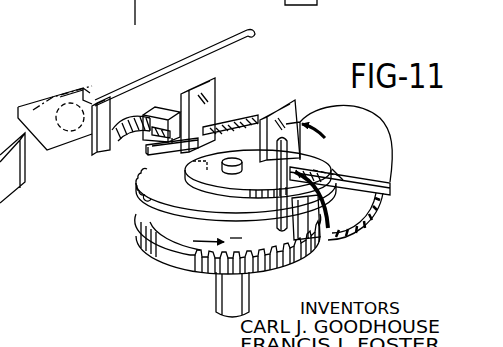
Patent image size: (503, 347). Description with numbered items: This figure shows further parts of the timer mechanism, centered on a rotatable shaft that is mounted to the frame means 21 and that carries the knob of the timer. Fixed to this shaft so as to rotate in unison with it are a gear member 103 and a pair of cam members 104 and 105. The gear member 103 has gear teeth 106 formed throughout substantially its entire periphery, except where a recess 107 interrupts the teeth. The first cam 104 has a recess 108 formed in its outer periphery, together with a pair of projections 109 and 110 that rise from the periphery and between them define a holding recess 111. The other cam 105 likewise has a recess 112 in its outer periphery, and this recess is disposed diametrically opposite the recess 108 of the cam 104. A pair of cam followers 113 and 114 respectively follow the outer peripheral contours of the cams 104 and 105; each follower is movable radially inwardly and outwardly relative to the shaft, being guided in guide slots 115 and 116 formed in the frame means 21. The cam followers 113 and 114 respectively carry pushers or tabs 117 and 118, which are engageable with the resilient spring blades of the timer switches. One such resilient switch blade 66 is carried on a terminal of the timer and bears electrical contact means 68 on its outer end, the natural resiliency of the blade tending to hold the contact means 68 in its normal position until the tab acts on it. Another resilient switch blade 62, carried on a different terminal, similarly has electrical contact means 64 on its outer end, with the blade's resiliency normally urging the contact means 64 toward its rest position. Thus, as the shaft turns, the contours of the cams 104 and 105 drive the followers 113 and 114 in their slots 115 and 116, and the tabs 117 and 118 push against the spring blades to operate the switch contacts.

The frame means 21 is at (364, 143).
The resilient switch blade 62 is at (35, 100).
The electrical contact means 64 is at (55, 98).
The resilient switch blade 66 is at (150, 86).
The electrical contact means 68 is at (92, 142).
The gear member 103 is at (287, 233).
The cam member 104 is at (160, 195).
The cam member 105 is at (200, 203).
The gear teeth 106 is at (142, 253).
The recess 107 is at (192, 268).
The recess 108 is at (172, 160).
The projection 109 is at (222, 140).
The projection 110 is at (240, 140).
The holding recess 111 is at (232, 142).
The recess 112 is at (289, 214).
The cam follower 113 is at (198, 83).
The cam follower 114 is at (298, 127).
The guide slot 115 is at (155, 110).
The guide slot 116 is at (363, 178).
The pusher or tab 117 is at (152, 140).
The pusher or tab 118 is at (236, 240).